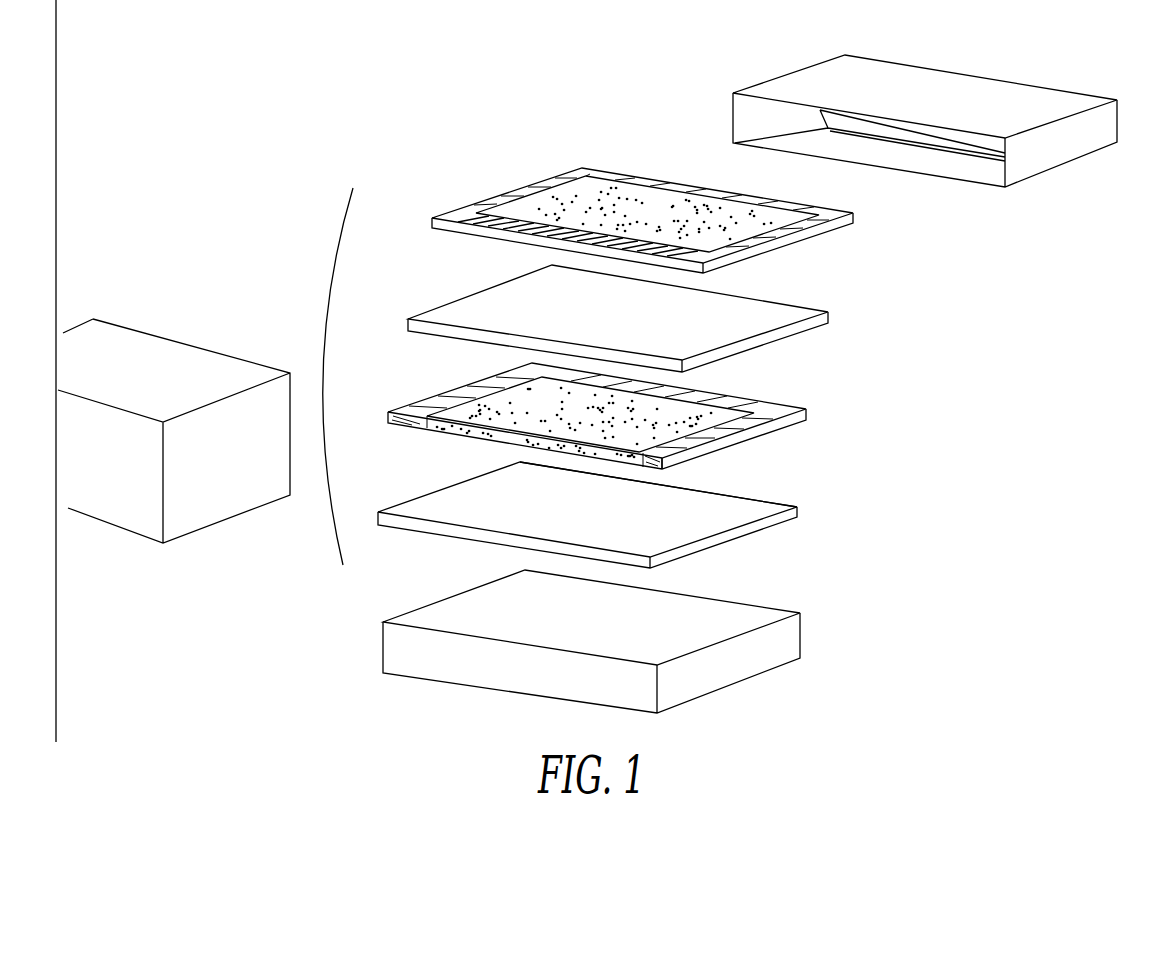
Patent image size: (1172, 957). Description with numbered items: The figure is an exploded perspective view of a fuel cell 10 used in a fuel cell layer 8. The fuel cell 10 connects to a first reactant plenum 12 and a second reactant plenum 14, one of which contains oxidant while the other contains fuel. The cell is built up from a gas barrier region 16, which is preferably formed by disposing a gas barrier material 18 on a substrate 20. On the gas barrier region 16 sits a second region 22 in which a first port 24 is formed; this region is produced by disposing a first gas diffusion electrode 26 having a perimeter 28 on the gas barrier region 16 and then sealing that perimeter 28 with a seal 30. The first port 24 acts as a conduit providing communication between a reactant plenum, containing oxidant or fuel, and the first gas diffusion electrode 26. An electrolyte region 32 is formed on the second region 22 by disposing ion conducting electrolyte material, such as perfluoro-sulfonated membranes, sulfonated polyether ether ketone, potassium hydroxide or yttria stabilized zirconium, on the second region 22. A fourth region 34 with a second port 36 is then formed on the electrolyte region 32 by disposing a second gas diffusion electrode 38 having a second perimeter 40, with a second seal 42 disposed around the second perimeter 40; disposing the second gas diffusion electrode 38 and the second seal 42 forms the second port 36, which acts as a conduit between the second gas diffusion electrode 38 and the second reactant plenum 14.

The fuel cell layer 8 is at (985, 310).
The fuel cell 10 is at (323, 375).
The first reactant plenum 12 is at (183, 522).
The second reactant plenum 14 is at (1077, 147).
The gas barrier region 16 is at (617, 515).
The gas barrier material 18 is at (722, 505).
The substrate 20 is at (787, 652).
The second region 22 is at (646, 419).
The first port 24 is at (664, 465).
The first gas diffusion electrode 26 is at (798, 405).
The perimeter 28 is at (722, 388).
The seal 30 is at (740, 378).
The electrolyte region 32 is at (815, 323).
The fourth region 34 is at (684, 190).
The second port 36 is at (790, 200).
The second gas diffusion electrode 38 is at (792, 212).
The second perimeter 40 is at (585, 172).
The second seal 42 is at (563, 175).